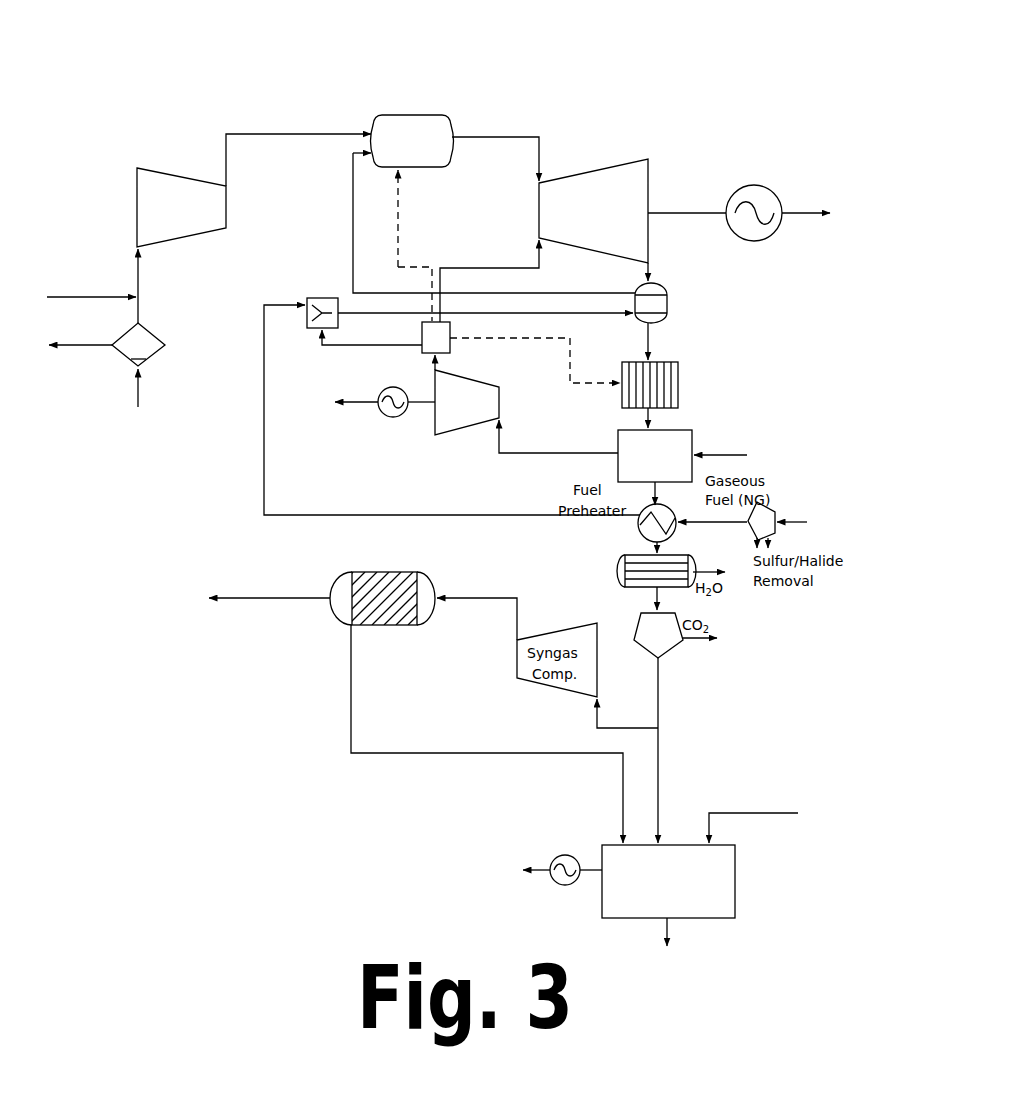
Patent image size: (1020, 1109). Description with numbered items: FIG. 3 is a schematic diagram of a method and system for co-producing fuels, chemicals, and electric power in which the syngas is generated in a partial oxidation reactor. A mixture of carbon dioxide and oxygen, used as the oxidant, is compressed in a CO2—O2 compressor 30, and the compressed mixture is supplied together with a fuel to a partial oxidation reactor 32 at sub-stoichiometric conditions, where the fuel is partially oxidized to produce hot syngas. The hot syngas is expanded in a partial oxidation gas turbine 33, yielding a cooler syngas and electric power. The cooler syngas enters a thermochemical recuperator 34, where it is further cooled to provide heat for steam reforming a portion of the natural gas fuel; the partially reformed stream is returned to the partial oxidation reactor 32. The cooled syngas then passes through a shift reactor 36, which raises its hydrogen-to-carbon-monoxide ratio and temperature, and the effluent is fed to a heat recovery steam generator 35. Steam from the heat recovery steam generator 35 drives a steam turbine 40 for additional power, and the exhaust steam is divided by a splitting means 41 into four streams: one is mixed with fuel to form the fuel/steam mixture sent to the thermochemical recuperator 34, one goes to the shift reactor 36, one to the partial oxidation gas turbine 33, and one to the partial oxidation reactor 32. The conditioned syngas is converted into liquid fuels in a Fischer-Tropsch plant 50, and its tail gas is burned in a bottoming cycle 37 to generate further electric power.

The CO2—O2 compressor 30 is at (147, 168).
The partial oxidation reactor 32 is at (412, 115).
The partial oxidation gas turbine 33 is at (617, 166).
The thermochemical recuperator 34 is at (667, 320).
The heat recovery steam generator 35 is at (692, 464).
The shift reactor 36 is at (678, 406).
The bottoming cycle 37 is at (735, 878).
The steam turbine 40 is at (435, 425).
The splitting means 41 is at (420, 347).
The Fischer-Tropsch plant 50 is at (336, 619).